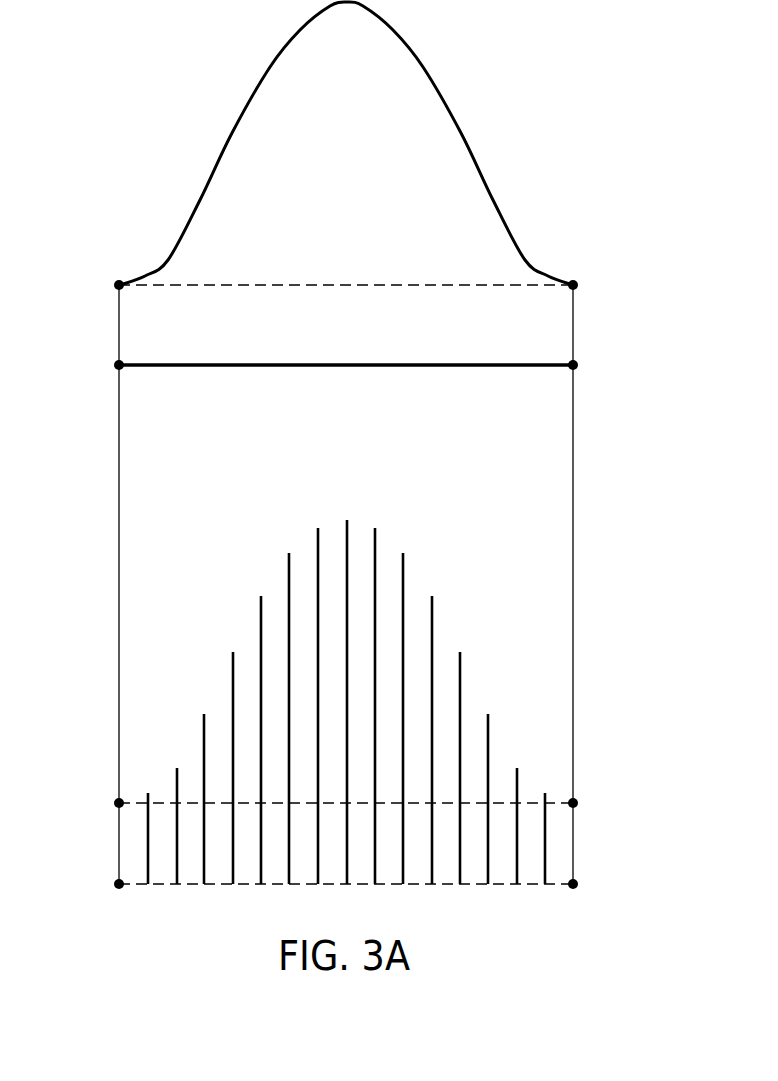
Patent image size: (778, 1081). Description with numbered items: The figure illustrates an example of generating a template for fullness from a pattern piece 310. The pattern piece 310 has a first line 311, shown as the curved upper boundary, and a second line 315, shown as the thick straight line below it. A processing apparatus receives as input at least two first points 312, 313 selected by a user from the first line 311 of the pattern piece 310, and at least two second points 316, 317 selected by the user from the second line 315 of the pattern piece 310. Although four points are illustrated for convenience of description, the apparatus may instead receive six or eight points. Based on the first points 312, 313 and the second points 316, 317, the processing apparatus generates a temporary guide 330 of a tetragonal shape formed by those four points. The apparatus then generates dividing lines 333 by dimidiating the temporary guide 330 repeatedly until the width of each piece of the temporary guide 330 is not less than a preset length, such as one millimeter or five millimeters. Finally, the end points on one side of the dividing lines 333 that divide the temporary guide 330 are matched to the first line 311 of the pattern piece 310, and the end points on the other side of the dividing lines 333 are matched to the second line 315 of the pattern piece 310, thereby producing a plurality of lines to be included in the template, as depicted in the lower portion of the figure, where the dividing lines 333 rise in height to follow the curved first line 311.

The first line 311 is at (455, 117).
The first point 312 is at (115, 282).
The first point 313 is at (577, 283).
The pattern piece 310 is at (574, 325).
The second line 315 is at (347, 366).
The second point 316 is at (115, 368).
The second point 317 is at (577, 368).
The dividing lines 333 is at (145, 848).
The temporary guide 330 is at (575, 840).